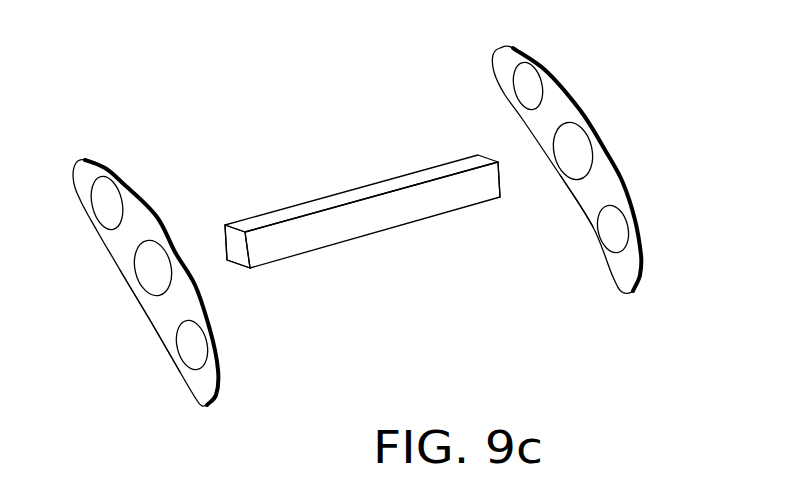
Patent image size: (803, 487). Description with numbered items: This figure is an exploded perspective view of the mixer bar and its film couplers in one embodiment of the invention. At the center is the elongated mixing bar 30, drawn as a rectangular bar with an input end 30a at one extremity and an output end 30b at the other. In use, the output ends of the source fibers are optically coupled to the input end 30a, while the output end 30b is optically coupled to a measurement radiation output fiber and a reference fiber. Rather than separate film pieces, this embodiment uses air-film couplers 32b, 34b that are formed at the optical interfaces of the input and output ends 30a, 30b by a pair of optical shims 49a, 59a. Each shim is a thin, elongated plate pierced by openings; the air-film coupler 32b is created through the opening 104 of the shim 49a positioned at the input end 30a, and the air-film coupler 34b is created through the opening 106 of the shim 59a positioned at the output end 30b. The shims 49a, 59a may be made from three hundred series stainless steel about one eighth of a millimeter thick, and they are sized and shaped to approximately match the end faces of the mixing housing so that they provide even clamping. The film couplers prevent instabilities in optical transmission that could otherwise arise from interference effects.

The mixing bar 30 is at (343, 197).
The input end of mixing bar 30a is at (500, 177).
The output end of mixing bar 30b is at (238, 255).
The air-film coupler 32b is at (573, 145).
The air-film coupler 34b is at (158, 267).
The optical shim 49a is at (558, 82).
The optical shim 59a is at (140, 213).
The opening 104 is at (587, 173).
The opening 106 is at (153, 307).